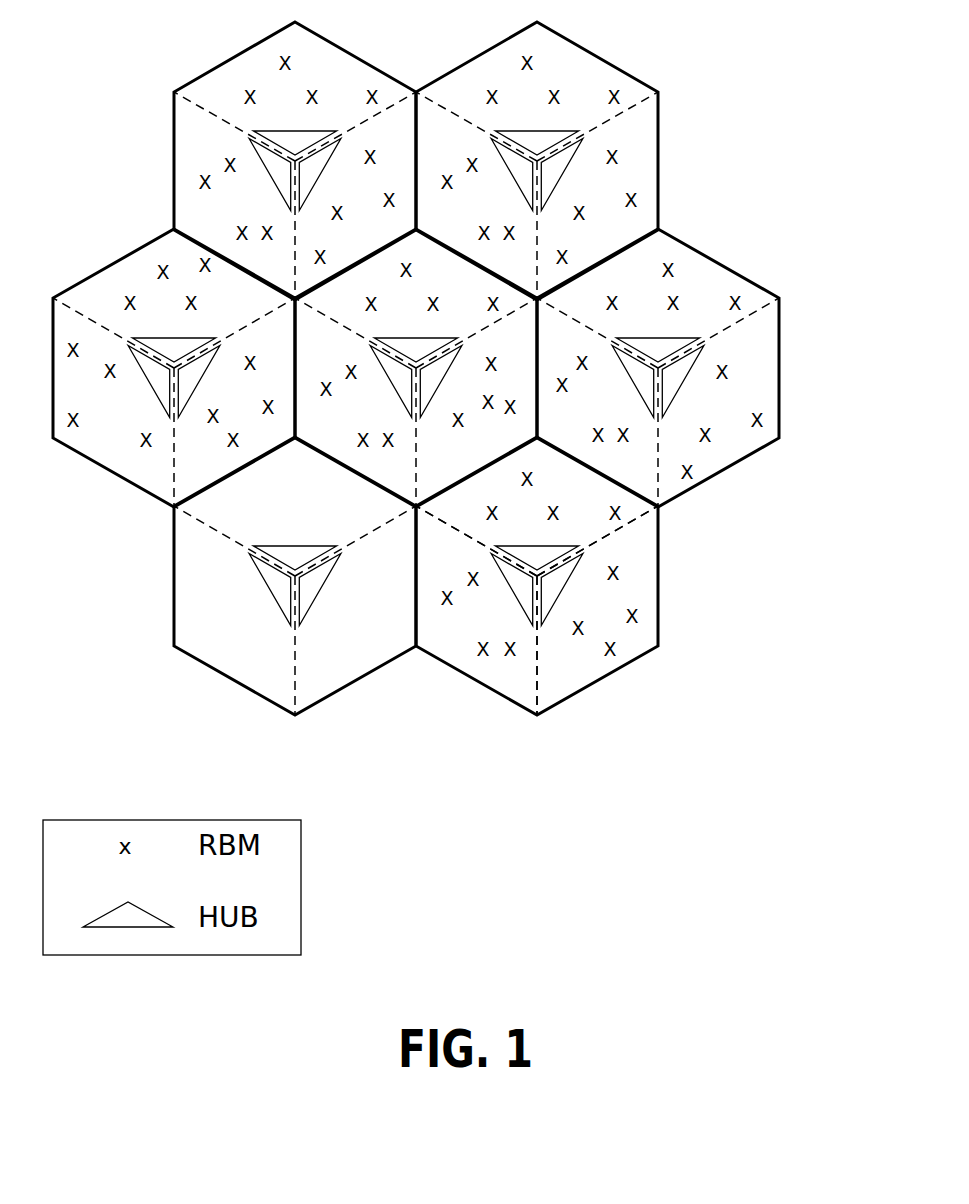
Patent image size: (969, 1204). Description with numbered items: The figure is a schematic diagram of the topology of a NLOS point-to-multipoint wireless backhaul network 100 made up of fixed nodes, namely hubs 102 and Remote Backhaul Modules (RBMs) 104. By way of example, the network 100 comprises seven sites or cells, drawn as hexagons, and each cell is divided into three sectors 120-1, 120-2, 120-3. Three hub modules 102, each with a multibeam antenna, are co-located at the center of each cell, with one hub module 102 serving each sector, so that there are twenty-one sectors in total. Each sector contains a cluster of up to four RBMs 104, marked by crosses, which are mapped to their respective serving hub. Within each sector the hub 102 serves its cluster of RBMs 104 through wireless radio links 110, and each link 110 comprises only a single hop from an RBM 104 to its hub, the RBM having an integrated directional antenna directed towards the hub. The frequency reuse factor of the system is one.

The wireless backhaul network 100 is at (148, 33).
The hub module 102 is at (268, 918).
The Remote Backhaul Module (RBM) 104 is at (308, 590).
The wireless link 110 is at (260, 608).
The first sector 120-1 is at (583, 490).
The second sector 120-2 is at (522, 675).
The third sector 120-3 is at (627, 642).